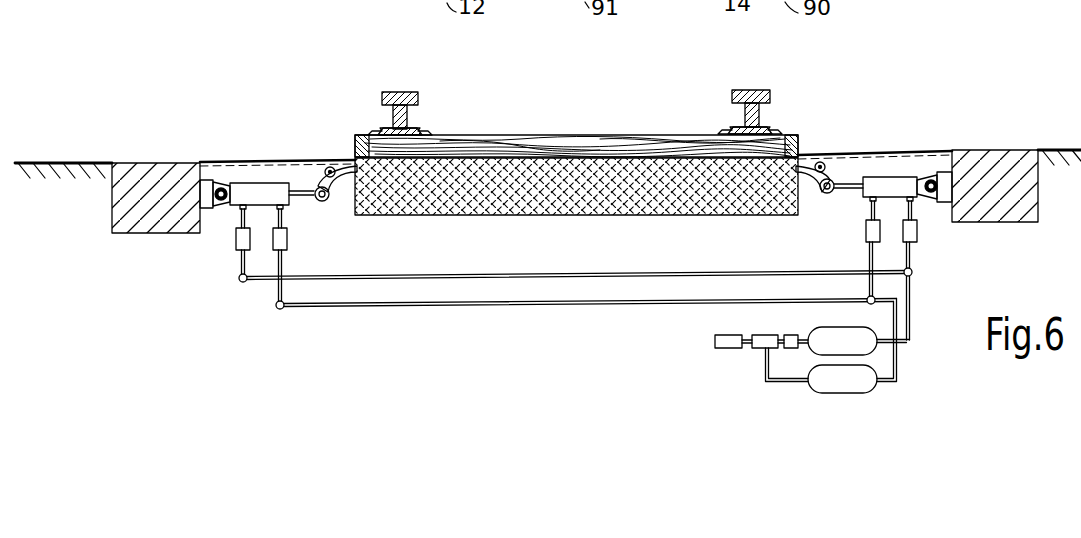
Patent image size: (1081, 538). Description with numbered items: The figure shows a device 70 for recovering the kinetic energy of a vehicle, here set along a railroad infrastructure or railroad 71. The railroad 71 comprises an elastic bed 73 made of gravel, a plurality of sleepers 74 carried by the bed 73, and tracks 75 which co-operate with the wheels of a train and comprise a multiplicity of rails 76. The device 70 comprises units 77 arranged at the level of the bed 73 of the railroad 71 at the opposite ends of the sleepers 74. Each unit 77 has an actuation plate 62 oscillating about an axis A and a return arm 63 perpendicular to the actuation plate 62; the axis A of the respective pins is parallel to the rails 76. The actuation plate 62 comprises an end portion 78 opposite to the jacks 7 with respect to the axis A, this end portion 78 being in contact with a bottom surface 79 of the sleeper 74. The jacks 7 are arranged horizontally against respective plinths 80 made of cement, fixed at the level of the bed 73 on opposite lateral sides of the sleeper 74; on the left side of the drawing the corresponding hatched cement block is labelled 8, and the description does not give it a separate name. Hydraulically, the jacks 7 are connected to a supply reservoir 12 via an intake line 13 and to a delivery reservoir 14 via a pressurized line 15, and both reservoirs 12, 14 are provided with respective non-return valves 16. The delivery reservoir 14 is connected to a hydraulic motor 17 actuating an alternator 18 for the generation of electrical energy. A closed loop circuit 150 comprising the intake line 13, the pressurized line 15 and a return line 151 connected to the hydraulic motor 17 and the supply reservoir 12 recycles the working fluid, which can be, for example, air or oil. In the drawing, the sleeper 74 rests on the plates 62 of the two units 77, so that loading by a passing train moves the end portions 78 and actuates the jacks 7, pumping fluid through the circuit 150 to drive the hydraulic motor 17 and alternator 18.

The jack 7 is at (265, 176).
The abutment 8 is at (130, 197).
The supply reservoir 12 is at (843, 394).
The intake line 13 is at (278, 310).
The delivery reservoir 14 is at (818, 326).
The pressurized line 15 is at (241, 283).
The non-return valve 16 is at (237, 249).
The hydraulic motor 17 is at (759, 349).
The alternator 18 is at (729, 349).
The actuation plate 62 is at (340, 150).
The return arm 63 is at (346, 198).
The device 70 is at (148, 254).
The railroad 71 is at (563, 139).
The elastic bed 73 is at (576, 207).
The sleeper 74 is at (645, 133).
The track 75 is at (416, 90).
The rail 76 is at (575, 84).
The unit 77 is at (932, 143).
The end portion 78 is at (365, 134).
The bottom surface 79 is at (552, 165).
The plinth 80 is at (1030, 195).
The closed loop circuit 150 is at (830, 366).
The return line 151 is at (836, 395).
The axis A is at (323, 158).